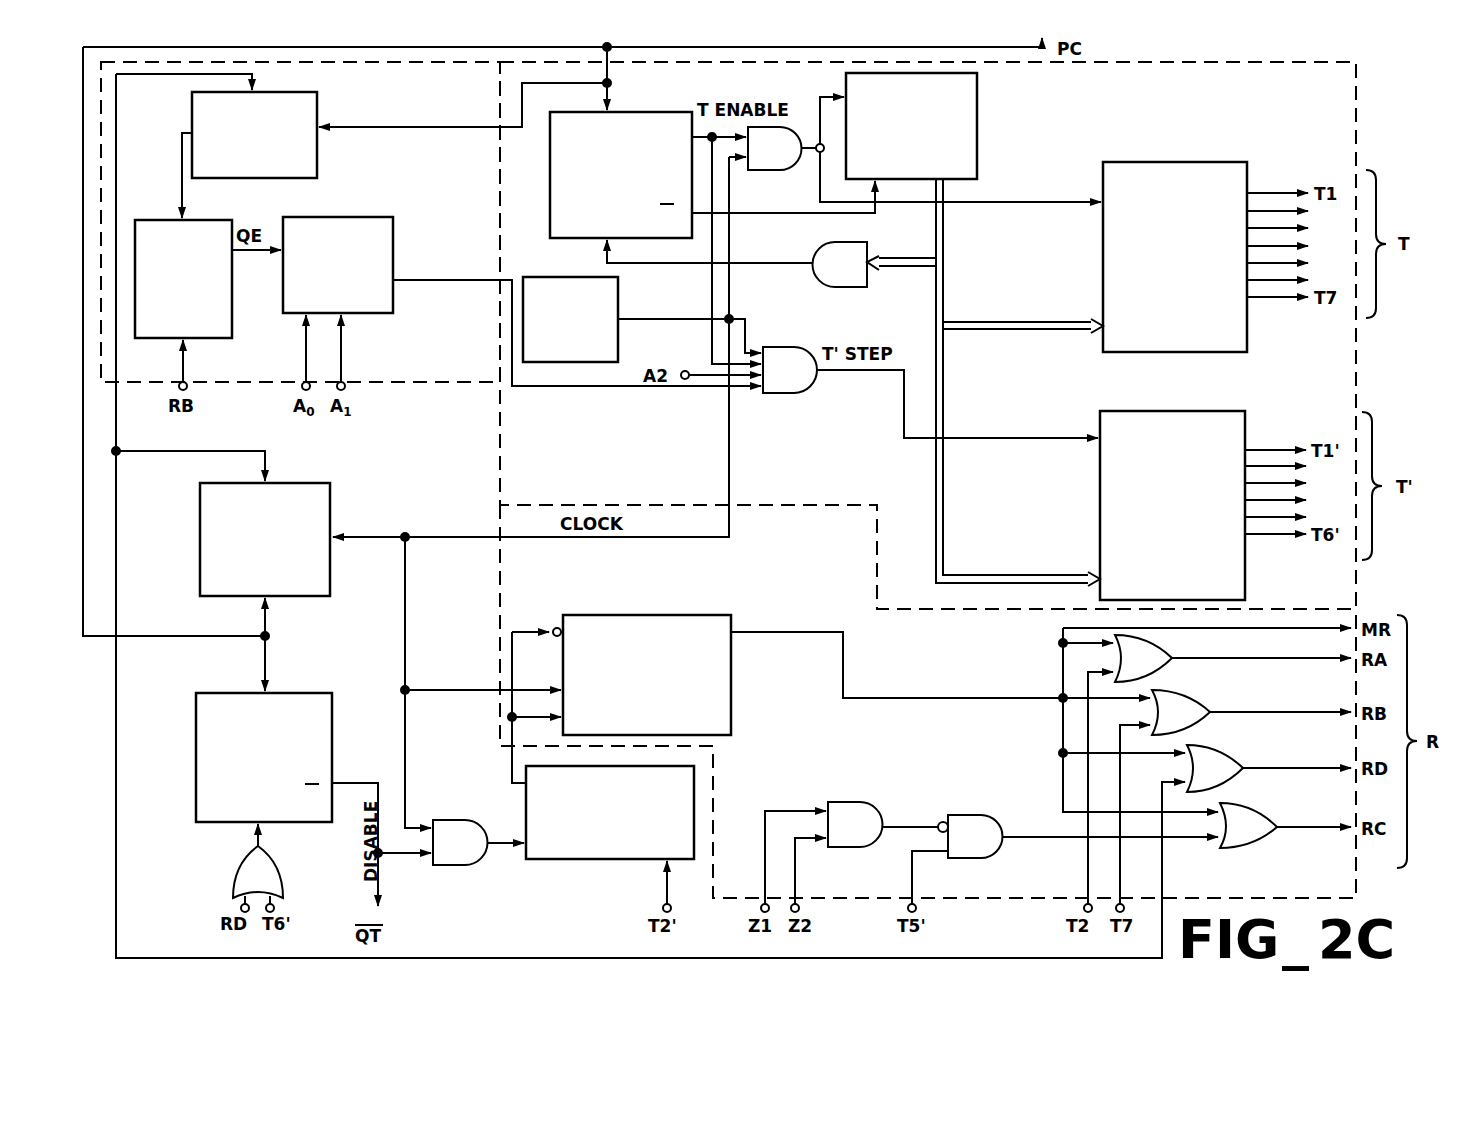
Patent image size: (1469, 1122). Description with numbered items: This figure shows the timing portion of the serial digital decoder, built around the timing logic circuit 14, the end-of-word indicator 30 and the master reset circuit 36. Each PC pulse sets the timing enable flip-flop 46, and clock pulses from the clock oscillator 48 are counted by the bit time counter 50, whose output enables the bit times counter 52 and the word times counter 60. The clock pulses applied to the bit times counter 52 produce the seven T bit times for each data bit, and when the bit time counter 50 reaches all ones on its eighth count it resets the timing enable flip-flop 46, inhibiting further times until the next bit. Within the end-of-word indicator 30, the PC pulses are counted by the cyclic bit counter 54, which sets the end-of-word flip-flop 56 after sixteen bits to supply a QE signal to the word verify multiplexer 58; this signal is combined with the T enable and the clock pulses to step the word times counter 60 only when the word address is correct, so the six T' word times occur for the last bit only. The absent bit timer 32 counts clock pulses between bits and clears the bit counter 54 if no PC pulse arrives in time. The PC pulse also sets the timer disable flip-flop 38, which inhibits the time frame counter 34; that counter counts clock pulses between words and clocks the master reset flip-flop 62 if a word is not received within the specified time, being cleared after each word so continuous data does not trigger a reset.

The timing logic circuit 14 is at (652, 483).
The end-of-word indicator 30 is at (428, 209).
The absent bit timer 32 is at (310, 596).
The time frame counter 34 is at (588, 860).
The master reset circuit 36 is at (671, 597).
The timer disable flip-flop 38 is at (196, 752).
The timing enable flip-flop 46 is at (550, 190).
The clock oscillator 48 is at (618, 297).
The bit time counter 50 is at (977, 127).
The bit times counter 52 is at (1195, 162).
The bit counter 54 is at (190, 115).
The end-of-word flip-flop 56 is at (232, 318).
The word verify multiplexer 58 is at (393, 248).
The word times counter 60 is at (1197, 411).
The master reset flip-flop 62 is at (731, 688).